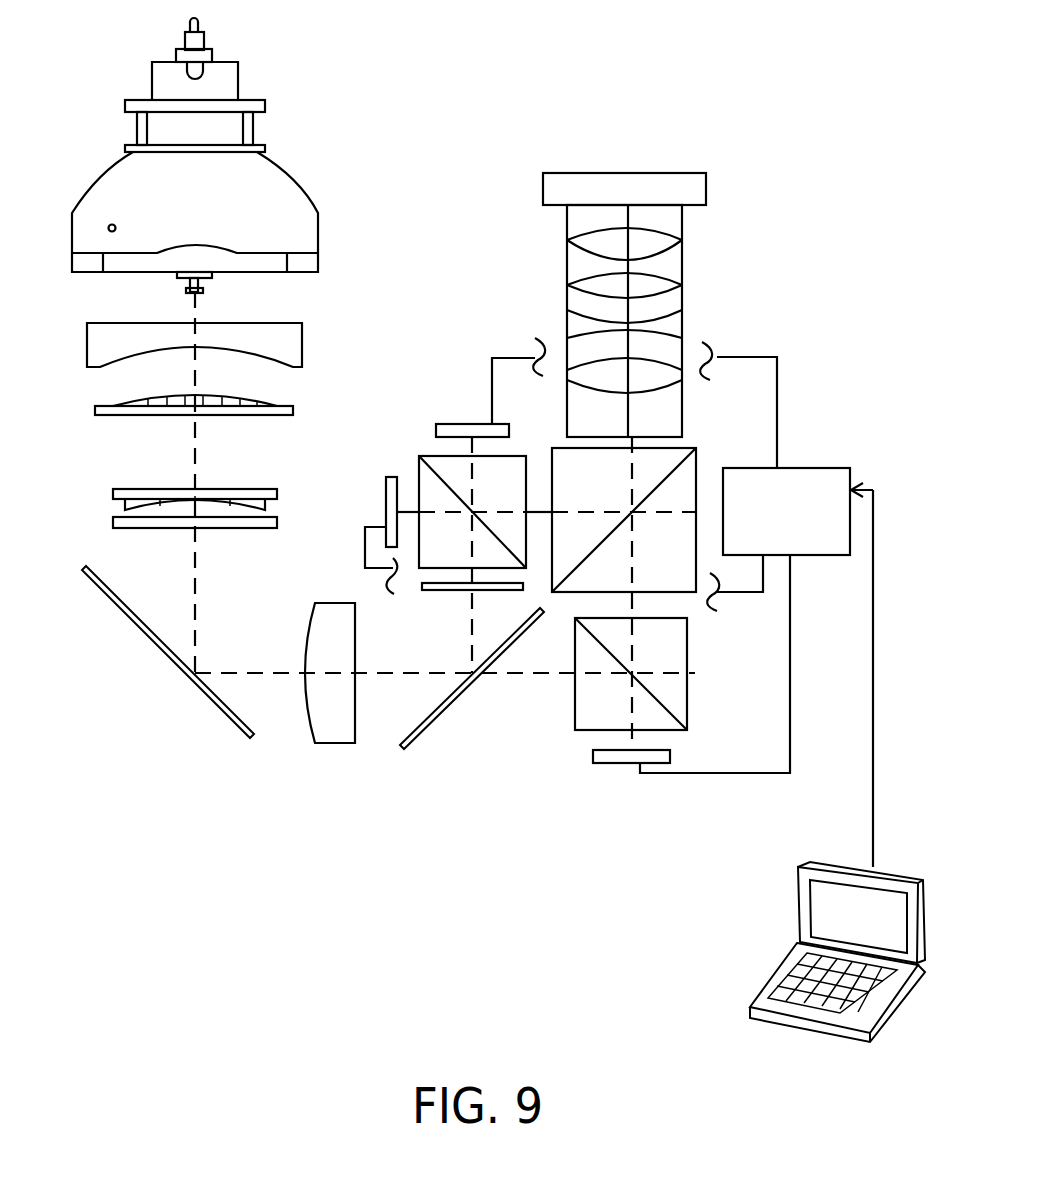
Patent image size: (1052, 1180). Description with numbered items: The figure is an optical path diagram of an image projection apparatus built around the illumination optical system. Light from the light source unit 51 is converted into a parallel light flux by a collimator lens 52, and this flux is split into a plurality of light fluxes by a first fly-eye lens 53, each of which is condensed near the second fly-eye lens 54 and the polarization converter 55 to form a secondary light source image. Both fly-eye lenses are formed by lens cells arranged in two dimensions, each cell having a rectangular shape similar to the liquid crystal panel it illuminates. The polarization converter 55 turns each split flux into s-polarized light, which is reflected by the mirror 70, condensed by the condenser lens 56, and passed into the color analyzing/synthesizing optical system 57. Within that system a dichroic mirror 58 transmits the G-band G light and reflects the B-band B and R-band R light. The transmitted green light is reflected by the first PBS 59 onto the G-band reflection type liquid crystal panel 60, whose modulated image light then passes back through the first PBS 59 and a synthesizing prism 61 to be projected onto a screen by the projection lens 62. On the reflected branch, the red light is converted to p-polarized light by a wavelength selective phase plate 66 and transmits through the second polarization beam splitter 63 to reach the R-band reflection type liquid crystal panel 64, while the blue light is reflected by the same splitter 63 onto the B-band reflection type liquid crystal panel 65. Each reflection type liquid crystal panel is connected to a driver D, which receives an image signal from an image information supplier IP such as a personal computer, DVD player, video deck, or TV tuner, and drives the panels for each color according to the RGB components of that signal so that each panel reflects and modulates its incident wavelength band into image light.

The light source unit 51 is at (287, 200).
The collimator lens 52 is at (306, 342).
The first fly-eye lens 53 is at (117, 408).
The second fly-eye lens 54 is at (123, 492).
The polarization converter 55 is at (120, 527).
The condenser lens 56 is at (340, 737).
The color analyzing/synthesizing optical system 57 is at (693, 780).
The dichroic mirror 58 is at (417, 737).
The first PBS 59 is at (678, 693).
The G-band reflection type liquid crystal panel 60 is at (607, 753).
The synthesizing prism 61 is at (697, 483).
The projection lens 62 is at (678, 298).
The second polarization beam splitter 63 is at (462, 533).
The R-band reflection type liquid crystal panel 64 is at (462, 427).
The B-band reflection type liquid crystal panel 65 is at (383, 492).
The wavelength selective phase plate 66 is at (483, 587).
The mirror 70 is at (137, 625).
The R-band R is at (478, 349).
The B-band B is at (362, 506).
The G-band G is at (759, 751).
The driver D is at (795, 468).
The image information supplier IP is at (763, 993).